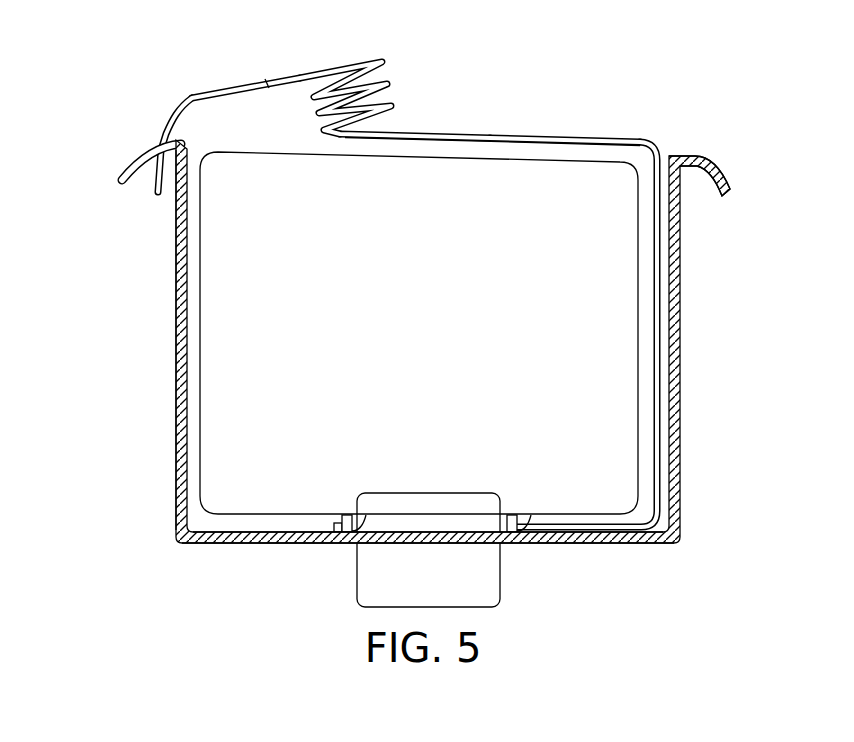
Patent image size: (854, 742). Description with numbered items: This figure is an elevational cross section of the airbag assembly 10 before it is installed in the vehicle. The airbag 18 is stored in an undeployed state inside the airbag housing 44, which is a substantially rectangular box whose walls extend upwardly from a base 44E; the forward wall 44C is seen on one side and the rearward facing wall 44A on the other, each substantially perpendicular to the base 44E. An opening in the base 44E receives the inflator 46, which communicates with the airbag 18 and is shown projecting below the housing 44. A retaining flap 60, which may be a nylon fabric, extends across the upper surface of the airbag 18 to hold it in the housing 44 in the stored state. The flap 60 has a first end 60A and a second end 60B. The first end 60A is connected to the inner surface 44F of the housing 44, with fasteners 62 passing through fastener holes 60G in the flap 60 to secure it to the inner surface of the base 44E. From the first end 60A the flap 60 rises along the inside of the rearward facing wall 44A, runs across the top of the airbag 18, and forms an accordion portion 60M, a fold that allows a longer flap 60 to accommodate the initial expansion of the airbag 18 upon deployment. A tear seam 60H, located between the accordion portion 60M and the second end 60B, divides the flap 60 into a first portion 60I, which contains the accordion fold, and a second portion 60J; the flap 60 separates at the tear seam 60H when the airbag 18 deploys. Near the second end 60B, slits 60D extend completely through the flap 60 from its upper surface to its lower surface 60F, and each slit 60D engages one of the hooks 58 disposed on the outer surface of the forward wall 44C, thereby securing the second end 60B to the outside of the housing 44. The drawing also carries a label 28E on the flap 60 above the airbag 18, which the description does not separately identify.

The airbag assembly 10 is at (578, 85).
The airbag 18 is at (200, 351).
The tab portion 28E is at (440, 131).
The airbag housing 44 is at (176, 441).
The rearward facing wall 44A is at (683, 316).
The forward wall 44C is at (177, 267).
The base 44E is at (557, 545).
The inner surface 44F is at (592, 532).
The inflator 46 is at (357, 573).
The hooks 58 is at (132, 155).
The retaining flap 60 is at (603, 131).
The first end 60A is at (334, 528).
The second end 60B is at (157, 196).
The slits 60D is at (164, 130).
The lower surface 60F is at (522, 146).
The fastener holes 60G is at (358, 524).
The tear seam 60H is at (267, 82).
The first portion 60I is at (505, 136).
The second portion 60J is at (212, 91).
The accordion portion 60M is at (389, 84).
The fasteners 62 is at (347, 515).